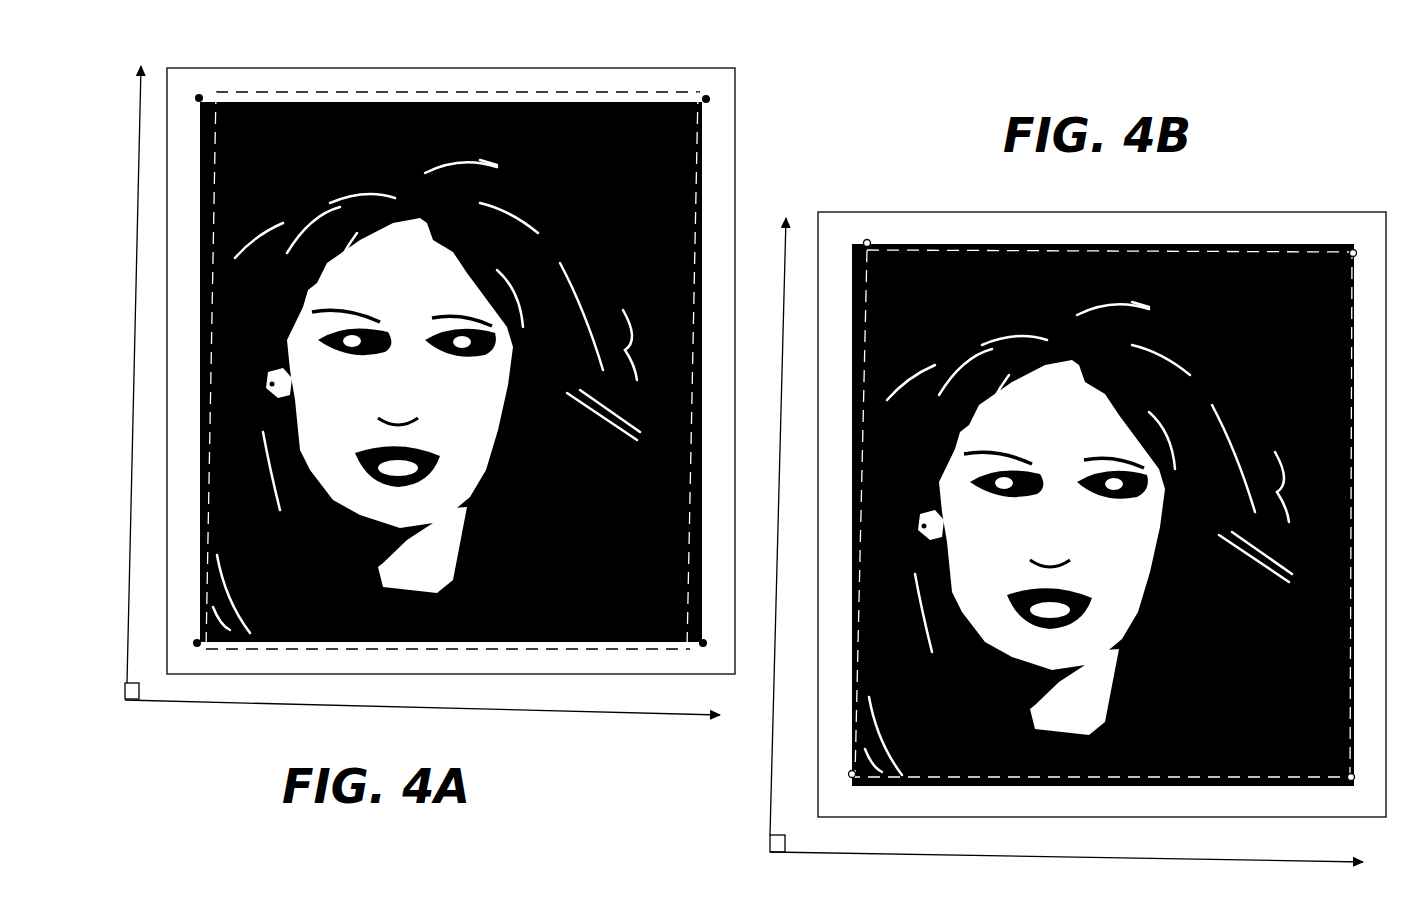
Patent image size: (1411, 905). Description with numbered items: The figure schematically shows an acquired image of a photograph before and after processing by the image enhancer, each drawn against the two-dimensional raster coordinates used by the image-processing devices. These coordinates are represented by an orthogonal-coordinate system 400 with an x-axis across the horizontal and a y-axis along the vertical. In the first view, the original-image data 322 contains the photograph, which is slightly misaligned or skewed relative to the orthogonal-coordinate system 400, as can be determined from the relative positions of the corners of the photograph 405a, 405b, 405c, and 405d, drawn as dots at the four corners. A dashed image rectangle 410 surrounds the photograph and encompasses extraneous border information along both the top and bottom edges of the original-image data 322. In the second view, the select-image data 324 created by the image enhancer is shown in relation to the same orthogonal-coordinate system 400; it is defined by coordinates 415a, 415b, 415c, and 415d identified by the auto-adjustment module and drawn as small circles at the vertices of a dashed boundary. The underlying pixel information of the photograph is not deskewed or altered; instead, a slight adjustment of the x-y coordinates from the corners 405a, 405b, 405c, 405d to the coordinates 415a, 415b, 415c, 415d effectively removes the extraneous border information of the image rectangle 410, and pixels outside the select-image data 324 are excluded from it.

In FIG. 4A, the orthogonal-coordinate system 400 is at (292, 709).
In FIG. 4B, the orthogonal-coordinate system 400 is at (765, 809).
In FIG. 4A, the original-image data 322 is at (712, 113).
In FIG. 4B, the select-image data 324 is at (1163, 228).
In FIG. 4A, the image rectangle 410 is at (372, 92).
In FIG. 4A, the corner of the photograph 405a is at (200, 95).
In FIG. 4A, the corner of the photograph 405b is at (198, 647).
In FIG. 4A, the corner of the photograph 405c is at (706, 96).
In FIG. 4A, the corner of the photograph 405d is at (703, 648).
In FIG. 4B, the coordinate of select-image data 415a is at (867, 240).
In FIG. 4B, the coordinate of select-image data 415b is at (852, 778).
In FIG. 4B, the coordinate of select-image data 415c is at (1353, 249).
In FIG. 4B, the coordinate of select-image data 415d is at (1351, 781).